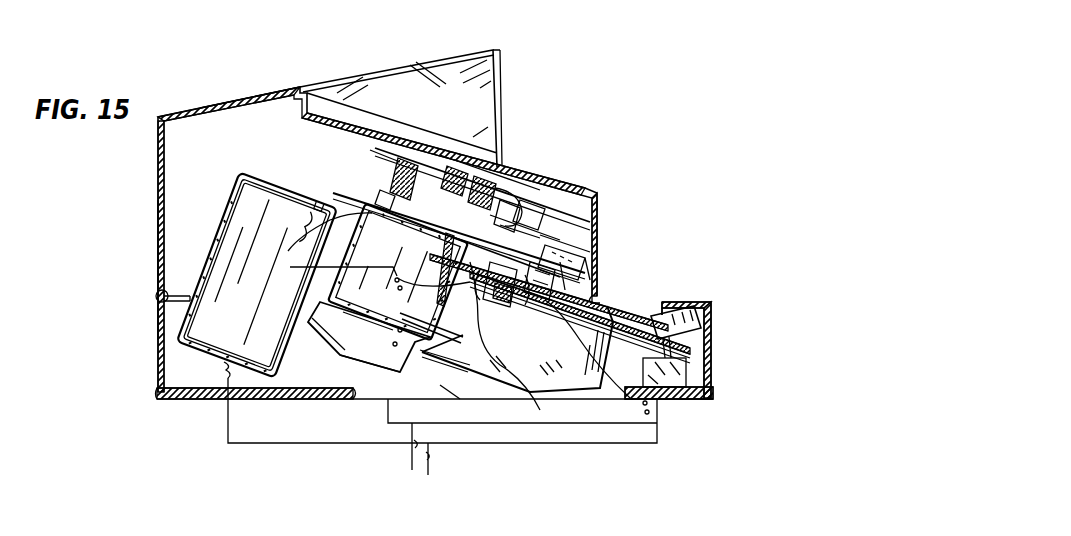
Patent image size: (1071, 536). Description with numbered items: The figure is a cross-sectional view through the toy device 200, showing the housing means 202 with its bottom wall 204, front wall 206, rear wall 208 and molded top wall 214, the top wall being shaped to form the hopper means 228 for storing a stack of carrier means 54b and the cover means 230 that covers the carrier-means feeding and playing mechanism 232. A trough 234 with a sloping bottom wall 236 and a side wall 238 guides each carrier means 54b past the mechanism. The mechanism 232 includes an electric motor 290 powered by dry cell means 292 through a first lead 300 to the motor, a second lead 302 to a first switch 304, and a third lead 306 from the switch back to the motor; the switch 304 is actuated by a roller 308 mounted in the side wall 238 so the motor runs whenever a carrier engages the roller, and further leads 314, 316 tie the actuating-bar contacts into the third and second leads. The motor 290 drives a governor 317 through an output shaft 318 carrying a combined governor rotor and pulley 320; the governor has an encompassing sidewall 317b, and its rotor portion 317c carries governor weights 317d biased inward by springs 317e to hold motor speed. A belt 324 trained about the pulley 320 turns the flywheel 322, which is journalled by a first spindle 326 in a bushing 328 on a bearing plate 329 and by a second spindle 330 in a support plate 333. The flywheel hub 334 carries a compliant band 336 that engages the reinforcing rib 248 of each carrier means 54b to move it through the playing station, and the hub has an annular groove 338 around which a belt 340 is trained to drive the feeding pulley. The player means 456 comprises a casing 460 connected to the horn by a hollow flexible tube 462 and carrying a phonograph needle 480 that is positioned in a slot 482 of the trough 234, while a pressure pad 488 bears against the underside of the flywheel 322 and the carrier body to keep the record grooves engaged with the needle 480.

The toy device 200 is at (610, 178).
The housing means 202 is at (211, 92).
The bottom wall 204 is at (192, 402).
The front wall 206 is at (714, 346).
The rear wall 208 is at (163, 244).
The top wall 214 is at (270, 98).
The hopper means 228 is at (457, 50).
The cover means 230 is at (382, 150).
The feeding and playing mechanism 232 is at (404, 356).
The trough 234 is at (630, 398).
The sloping bottom wall 236 is at (612, 295).
The side wall 238 is at (668, 310).
The reinforcing rib 248 is at (580, 313).
The electric motor 290 is at (288, 251).
The dry cell means 292 is at (238, 216).
The first lead 300 is at (380, 265).
The second lead 302 is at (298, 446).
The first switch 304 is at (690, 400).
The third lead 306 is at (500, 425).
The roller 308 is at (712, 320).
The lead 314 is at (410, 458).
The lead 316 is at (430, 472).
The governor 317 is at (388, 141).
The encompassing sidewall 317b is at (396, 175).
The rotor portion 317c is at (490, 170).
The governor weights 317d is at (455, 168).
The springs 317e is at (395, 160).
The output shaft 318 is at (393, 203).
The combined governor rotor and pulley 320 is at (410, 200).
The flywheel 322 is at (482, 205).
The belt 324 is at (383, 196).
The first spindle 326 is at (565, 240).
The bushing 328 is at (540, 215).
The bearing plate 329 is at (597, 218).
The second spindle 330 is at (517, 349).
The support plate 333 is at (369, 337).
The hub 334 is at (588, 351).
The compliant band 336 is at (480, 330).
The annular groove 338 is at (620, 250).
The belt 340 is at (505, 220).
The player means 456 is at (575, 360).
The casing 460 is at (540, 410).
The hollow flexible tube 462 is at (470, 383).
The phonograph needle 480 is at (525, 300).
The slot 482 is at (468, 405).
The pressure pad 488 is at (580, 265).
The carrier means 54b is at (598, 278).